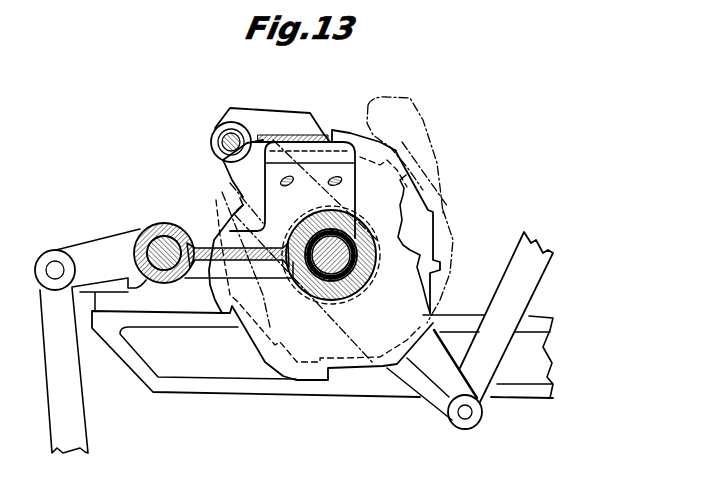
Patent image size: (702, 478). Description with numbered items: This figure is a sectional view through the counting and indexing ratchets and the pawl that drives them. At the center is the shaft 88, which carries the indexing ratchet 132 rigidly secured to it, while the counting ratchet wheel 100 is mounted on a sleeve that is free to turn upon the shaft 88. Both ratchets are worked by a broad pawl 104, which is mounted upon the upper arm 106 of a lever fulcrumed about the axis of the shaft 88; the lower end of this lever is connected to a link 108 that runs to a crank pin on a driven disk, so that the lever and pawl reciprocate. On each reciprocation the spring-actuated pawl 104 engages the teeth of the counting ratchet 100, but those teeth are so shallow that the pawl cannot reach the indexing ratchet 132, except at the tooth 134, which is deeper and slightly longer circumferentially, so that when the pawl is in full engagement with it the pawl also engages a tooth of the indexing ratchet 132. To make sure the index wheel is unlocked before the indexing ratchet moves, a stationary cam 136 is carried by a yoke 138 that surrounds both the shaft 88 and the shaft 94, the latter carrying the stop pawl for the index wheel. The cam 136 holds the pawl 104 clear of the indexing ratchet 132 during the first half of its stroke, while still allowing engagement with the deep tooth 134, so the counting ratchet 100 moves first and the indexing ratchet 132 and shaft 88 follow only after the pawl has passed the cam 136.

The shaft 88 is at (332, 255).
The shaft 94 is at (144, 224).
The counting ratchet wheel 100 is at (378, 152).
The broad pawl 104 is at (291, 98).
The upper arm 106 is at (230, 165).
The link 108 is at (522, 284).
The indexing ratchet 132 is at (418, 221).
The tooth 134 is at (240, 198).
The stationary cam 136 is at (343, 140).
The yoke 138 is at (243, 247).